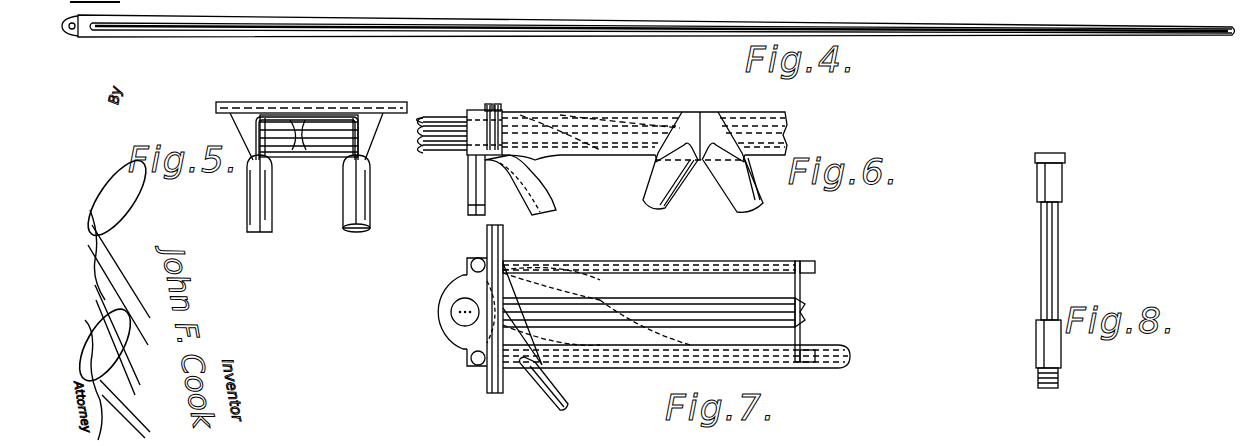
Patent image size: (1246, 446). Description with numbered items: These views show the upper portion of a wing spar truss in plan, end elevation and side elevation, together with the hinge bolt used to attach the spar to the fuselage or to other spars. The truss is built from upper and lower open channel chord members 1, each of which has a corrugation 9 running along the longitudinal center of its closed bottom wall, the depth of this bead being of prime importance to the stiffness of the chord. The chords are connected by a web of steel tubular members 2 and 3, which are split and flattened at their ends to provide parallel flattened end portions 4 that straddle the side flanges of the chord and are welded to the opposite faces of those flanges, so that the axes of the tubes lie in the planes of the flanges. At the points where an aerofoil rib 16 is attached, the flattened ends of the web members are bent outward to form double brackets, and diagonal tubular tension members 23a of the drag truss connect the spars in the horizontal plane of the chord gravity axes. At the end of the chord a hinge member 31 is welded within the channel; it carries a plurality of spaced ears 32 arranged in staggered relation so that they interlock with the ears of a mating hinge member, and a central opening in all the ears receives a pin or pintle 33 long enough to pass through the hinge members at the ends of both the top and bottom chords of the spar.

In FIG. 4, the channel chord member 1 is at (465, 38).
In FIG. 6, the channel chord member 1 is at (777, 138).
In FIG. 7, the channel chord member 1 is at (800, 286).
In FIG. 5, the tubular web member 2 is at (358, 232).
In FIG. 6, the tubular web member 2 is at (648, 208).
In FIG. 7, the tubular web member 2 is at (650, 368).
In FIG. 5, the tubular web member 3 is at (260, 232).
In FIG. 6, the tubular web member 3 is at (556, 206).
In FIG. 7, the tubular web member 3 is at (580, 262).
In FIG. 5, the flattened end portion 4 is at (348, 145).
In FIG. 6, the flattened end portion 4 is at (712, 122).
In FIG. 4, the corrugation 9 is at (412, 36).
In FIG. 7, the corrugation 9 is at (805, 310).
In FIG. 5, the aerofoil rib 16 is at (228, 101).
In FIG. 6, the aerofoil rib 16 is at (490, 104).
In FIG. 7, the aerofoil rib 16 is at (504, 232).
In FIG. 7, the diagonal tubular tension member 23a is at (570, 392).
In FIG. 4, the hinge member 31 is at (72, 36).
In FIG. 5, the hinge member 31 is at (283, 125).
In FIG. 6, the hinge member 31 is at (445, 115).
In FIG. 7, the hinge member 31 is at (448, 285).
In FIG. 5, the leaves or spaced ears 32 is at (302, 155).
In FIG. 6, the leaves or spaced ears 32 is at (438, 146).
In FIG. 8, the pin or pintle 33 is at (1035, 270).